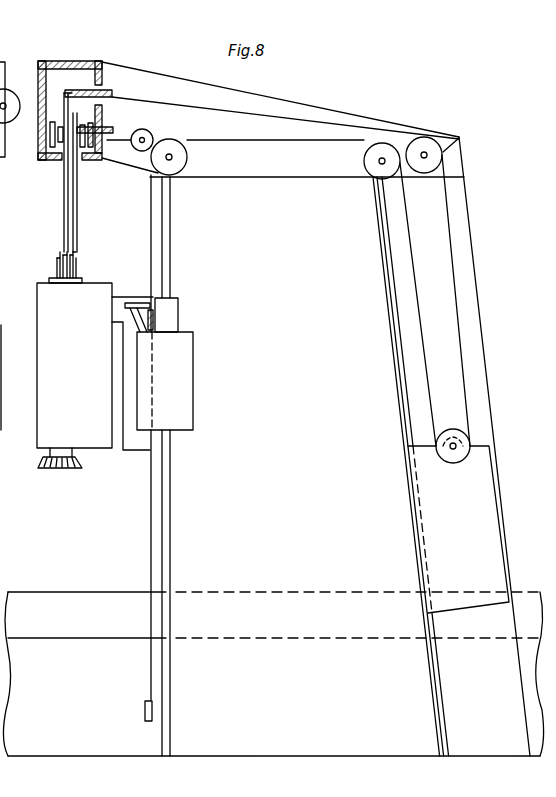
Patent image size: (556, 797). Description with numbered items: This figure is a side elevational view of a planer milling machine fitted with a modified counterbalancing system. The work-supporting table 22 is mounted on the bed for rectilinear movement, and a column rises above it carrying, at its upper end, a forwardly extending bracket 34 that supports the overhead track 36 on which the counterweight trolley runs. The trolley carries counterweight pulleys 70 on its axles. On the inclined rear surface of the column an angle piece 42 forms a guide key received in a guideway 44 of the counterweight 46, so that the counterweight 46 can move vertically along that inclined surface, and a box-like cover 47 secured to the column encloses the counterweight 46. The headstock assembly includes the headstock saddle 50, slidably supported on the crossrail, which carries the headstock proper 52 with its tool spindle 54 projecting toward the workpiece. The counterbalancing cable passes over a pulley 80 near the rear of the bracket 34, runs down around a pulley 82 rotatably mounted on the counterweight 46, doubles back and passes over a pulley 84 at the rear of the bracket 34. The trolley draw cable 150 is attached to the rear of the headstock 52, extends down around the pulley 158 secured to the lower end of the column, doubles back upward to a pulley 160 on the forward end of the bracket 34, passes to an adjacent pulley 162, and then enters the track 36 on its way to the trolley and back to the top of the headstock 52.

The work-supporting table 22 is at (50, 590).
The forwardly extending bracket 34 is at (271, 101).
The overhead track 36 is at (69, 53).
The angle piece 42 is at (444, 686).
The guideway 44 is at (424, 532).
The counterweight 46 is at (483, 468).
The box-like cover 47 is at (475, 276).
The headstock saddle 50 is at (125, 440).
The headstock proper 52 is at (92, 448).
The tool spindle 54 is at (56, 350).
The counterweight pulley 70 is at (63, 147).
The pulley 80 is at (389, 148).
The pulley 82 is at (455, 431).
The pulley 84 is at (431, 143).
The cable 150 is at (166, 536).
The pulley 158 is at (153, 711).
The pulley 160 is at (144, 131).
The pulley 162 is at (108, 126).